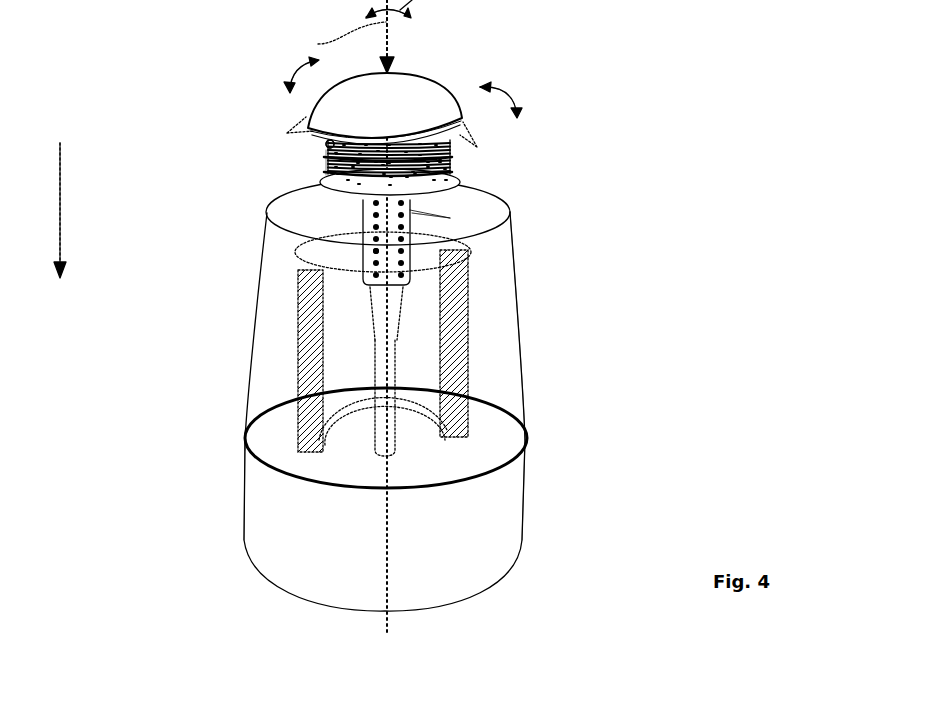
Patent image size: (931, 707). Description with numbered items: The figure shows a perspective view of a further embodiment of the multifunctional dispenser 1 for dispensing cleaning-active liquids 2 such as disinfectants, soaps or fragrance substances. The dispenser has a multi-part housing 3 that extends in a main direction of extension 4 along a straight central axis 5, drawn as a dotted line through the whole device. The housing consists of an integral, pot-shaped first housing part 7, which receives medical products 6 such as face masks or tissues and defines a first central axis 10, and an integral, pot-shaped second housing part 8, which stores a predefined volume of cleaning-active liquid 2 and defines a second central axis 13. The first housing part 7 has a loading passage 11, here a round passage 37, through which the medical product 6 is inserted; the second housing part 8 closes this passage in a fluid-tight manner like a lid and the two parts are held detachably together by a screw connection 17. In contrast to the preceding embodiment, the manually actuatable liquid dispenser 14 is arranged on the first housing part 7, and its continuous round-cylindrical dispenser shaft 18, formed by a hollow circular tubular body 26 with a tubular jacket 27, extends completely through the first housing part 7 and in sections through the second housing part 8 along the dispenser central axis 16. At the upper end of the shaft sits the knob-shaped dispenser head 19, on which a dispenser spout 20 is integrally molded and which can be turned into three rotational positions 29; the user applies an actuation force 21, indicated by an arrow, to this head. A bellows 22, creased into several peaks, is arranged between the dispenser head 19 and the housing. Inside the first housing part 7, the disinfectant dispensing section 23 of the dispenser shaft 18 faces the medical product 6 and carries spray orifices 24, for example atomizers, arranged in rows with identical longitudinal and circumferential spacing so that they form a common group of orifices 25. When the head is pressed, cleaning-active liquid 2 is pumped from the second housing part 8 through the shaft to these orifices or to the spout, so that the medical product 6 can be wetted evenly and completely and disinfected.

The multifunctional dispenser 1 is at (630, 165).
The cleaning-active liquid 2 is at (490, 515).
The multi-part housing 3 is at (521, 294).
The main direction of extension 4 is at (60, 218).
The central axis 5 is at (368, 59).
The medical product 6 is at (297, 365).
The first housing part 7 is at (415, 412).
The second housing part 8 is at (518, 482).
The first central axis 10 is at (388, 14).
The loading passage 11 is at (505, 425).
The second central axis 13 is at (304, 76).
The liquid dispenser 14 is at (310, 154).
The dispenser central axis 16 is at (498, 102).
The screw connection 17 is at (242, 440).
The dispenser shaft 18 is at (412, 213).
The dispenser head 19 is at (420, 78).
The dispenser spout 20 is at (326, 144).
The actuation force 21 is at (400, 43).
The bellows 22 is at (446, 161).
The disinfectant dispensing section 23 is at (348, 285).
The spray orifice 24 is at (376, 251).
The group of orifices 25 is at (374, 239).
The circular tubular body 26 is at (431, 215).
The tubular jacket 27 is at (431, 215).
The rotational positions 29 is at (330, 144).
The round passage 37 is at (386, 438).